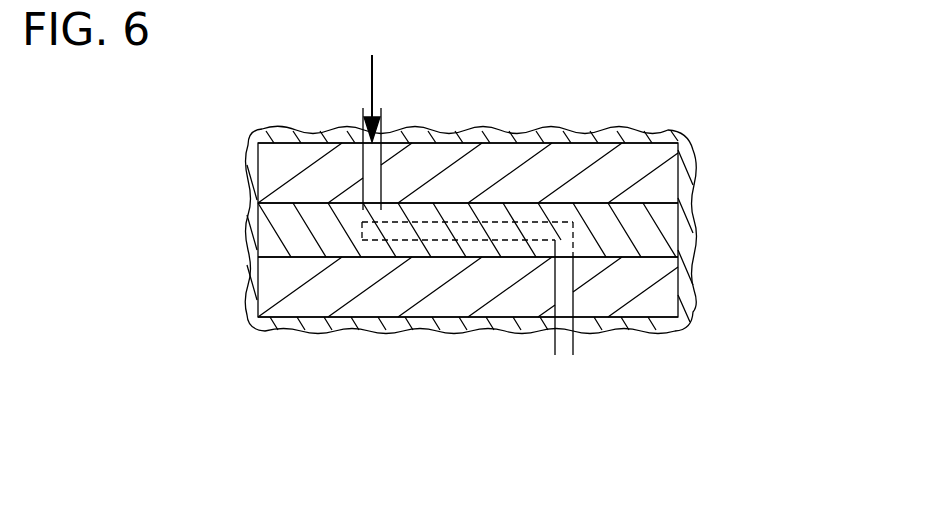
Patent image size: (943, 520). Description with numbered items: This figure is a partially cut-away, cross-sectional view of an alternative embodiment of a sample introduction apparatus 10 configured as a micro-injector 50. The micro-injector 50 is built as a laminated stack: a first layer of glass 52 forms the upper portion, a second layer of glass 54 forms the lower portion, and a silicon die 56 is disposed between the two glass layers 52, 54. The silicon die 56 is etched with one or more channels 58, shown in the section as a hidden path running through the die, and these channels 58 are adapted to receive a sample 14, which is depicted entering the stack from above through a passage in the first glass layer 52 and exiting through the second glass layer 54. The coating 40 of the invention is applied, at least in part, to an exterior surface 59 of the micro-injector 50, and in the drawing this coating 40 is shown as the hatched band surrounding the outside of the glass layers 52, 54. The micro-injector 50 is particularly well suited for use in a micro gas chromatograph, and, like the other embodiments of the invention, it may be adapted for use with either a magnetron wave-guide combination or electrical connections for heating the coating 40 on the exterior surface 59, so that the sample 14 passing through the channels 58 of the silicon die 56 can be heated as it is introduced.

The device 10 is at (788, 70).
The sample 14 is at (373, 90).
The coating 40 is at (685, 162).
The micro-injector 50 is at (644, 81).
The first layer of glass 52 is at (503, 158).
The second layer of glass 54 is at (660, 301).
The silicon die 56 is at (668, 225).
The channels 58 is at (432, 242).
The exterior surface 59 is at (257, 162).